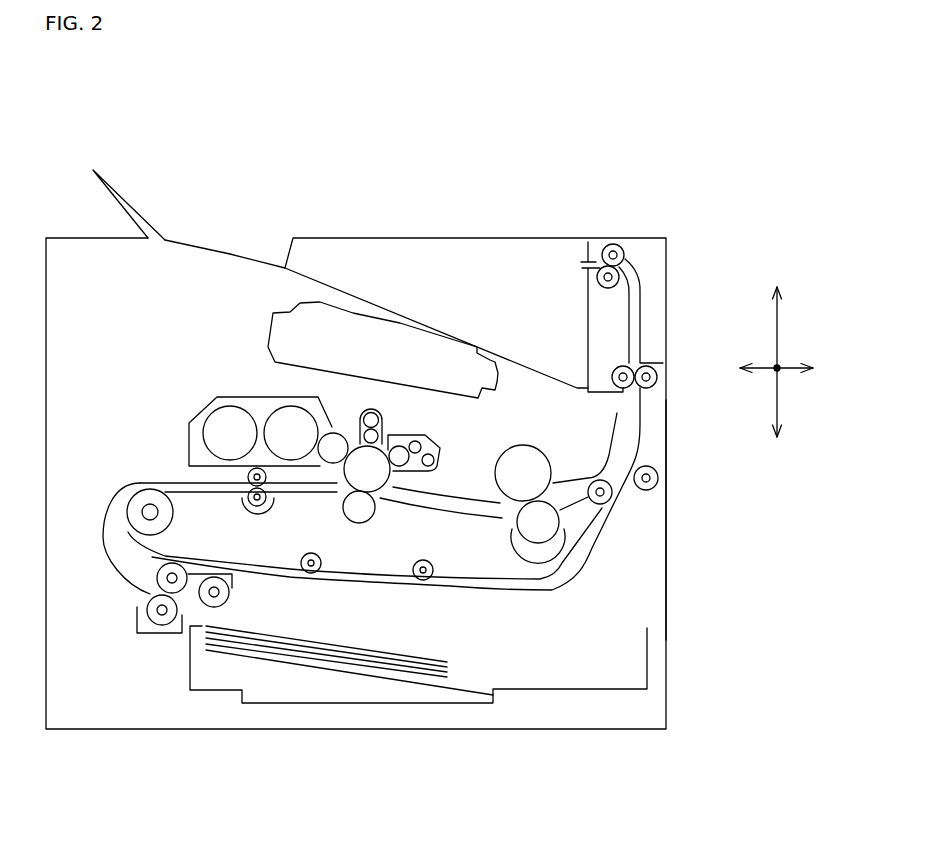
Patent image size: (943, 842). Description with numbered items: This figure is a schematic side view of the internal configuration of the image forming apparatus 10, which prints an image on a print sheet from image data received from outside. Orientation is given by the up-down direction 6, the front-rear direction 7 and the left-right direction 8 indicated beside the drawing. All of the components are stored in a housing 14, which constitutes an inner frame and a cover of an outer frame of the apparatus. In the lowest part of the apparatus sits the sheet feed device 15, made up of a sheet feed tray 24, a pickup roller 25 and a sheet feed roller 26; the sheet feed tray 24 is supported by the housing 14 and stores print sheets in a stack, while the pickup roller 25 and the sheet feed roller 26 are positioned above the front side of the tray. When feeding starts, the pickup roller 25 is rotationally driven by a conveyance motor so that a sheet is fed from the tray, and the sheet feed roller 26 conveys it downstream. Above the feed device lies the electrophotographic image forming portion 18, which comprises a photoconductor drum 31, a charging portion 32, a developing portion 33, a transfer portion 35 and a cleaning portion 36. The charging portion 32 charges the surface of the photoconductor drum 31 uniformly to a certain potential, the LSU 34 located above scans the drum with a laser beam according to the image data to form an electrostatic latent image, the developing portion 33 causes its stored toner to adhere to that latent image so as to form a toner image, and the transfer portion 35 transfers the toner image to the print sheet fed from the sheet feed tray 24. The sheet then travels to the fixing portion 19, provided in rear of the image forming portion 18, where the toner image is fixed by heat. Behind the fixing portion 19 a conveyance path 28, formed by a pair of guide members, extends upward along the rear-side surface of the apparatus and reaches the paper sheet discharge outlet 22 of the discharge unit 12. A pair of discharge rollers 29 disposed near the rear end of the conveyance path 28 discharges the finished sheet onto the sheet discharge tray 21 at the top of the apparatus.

The up-down direction 6 is at (777, 325).
The front-rear direction 7 is at (765, 368).
The left-right direction 8 is at (777, 368).
The image forming apparatus 10 is at (207, 207).
The discharge unit 12 is at (677, 242).
The housing 14 is at (666, 520).
The sheet feed device 15 is at (140, 695).
The image forming portion 18 is at (183, 380).
The fixing portion 19 is at (505, 547).
The sheet discharge tray 21 is at (393, 293).
The paper sheet discharge outlet 22 is at (580, 261).
The sheet feed tray 24 is at (190, 667).
The pickup roller 25 is at (232, 590).
The sheet feed roller 26 is at (153, 582).
The conveyance path 28 is at (628, 442).
The pair of discharge rollers 29 is at (597, 248).
The photoconductor drum 31 is at (388, 487).
The charging portion 32 is at (381, 414).
The developing portion 33 is at (253, 395).
The LSU (Laser Scanning Unit) 34 is at (270, 333).
The transfer portion 35 is at (355, 520).
The cleaning portion 36 is at (440, 442).